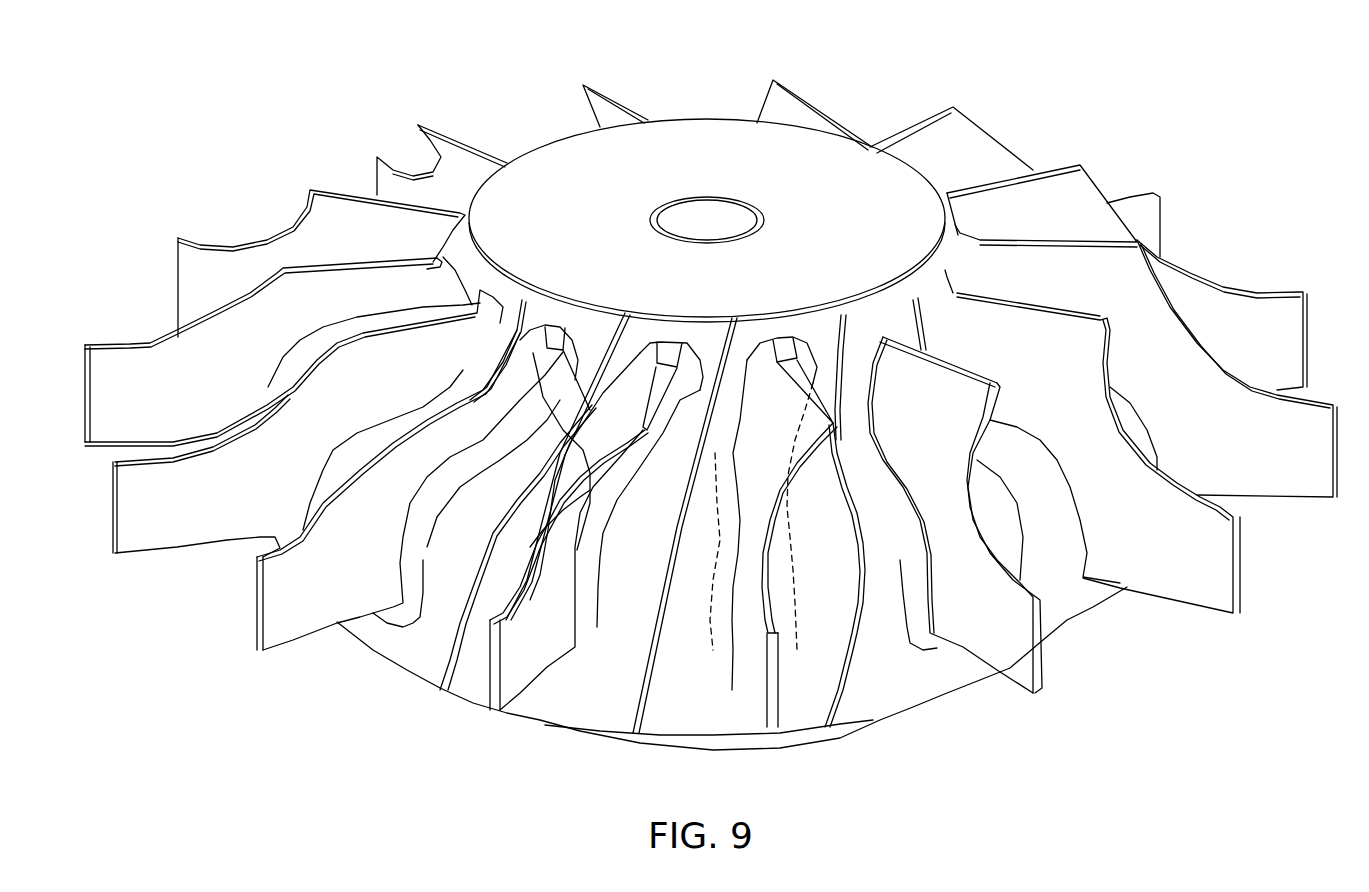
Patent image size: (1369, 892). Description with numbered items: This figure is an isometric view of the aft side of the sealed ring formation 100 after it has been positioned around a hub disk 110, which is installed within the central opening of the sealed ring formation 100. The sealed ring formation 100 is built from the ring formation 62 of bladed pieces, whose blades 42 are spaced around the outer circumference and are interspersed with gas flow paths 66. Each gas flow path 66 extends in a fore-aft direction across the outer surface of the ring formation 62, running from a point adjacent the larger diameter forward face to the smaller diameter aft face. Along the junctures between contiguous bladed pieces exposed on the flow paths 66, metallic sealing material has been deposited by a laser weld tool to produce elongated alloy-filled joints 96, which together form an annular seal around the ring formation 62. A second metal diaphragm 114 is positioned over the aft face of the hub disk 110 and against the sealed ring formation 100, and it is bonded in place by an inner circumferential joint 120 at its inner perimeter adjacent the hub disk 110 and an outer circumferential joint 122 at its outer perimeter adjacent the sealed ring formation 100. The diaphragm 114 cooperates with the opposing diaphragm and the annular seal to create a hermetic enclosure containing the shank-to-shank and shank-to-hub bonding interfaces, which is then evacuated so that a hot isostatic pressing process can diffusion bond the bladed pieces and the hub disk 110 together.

The sealed ring formation 100 is at (643, 405).
The blades 42 is at (1271, 462).
The ring formation 62 is at (951, 104).
The gas flow paths 66 is at (362, 470).
The alloy-filled joint 96 is at (698, 480).
The hub disk 110 is at (707, 194).
The second metal diaphragm 114 is at (707, 192).
The inner circumferential joint 120 is at (740, 222).
The outer circumferential joint 122 is at (707, 272).